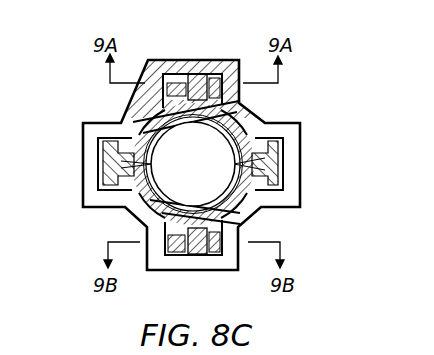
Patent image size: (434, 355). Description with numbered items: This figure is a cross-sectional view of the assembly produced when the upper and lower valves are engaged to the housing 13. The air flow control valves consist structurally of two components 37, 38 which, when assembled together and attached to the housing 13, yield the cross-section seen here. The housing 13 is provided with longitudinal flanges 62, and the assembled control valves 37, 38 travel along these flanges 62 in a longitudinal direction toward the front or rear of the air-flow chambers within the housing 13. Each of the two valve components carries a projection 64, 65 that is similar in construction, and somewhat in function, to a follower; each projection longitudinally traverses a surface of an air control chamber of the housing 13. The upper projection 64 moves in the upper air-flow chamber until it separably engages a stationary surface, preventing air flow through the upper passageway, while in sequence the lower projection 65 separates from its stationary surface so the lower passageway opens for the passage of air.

The housing 13 is at (152, 124).
The air flow control valve component 37 is at (247, 122).
The air flow control valve component 38 is at (302, 163).
The longitudinal flanges 62 is at (258, 160).
The projection 64 is at (197, 90).
The projection 65 is at (200, 243).